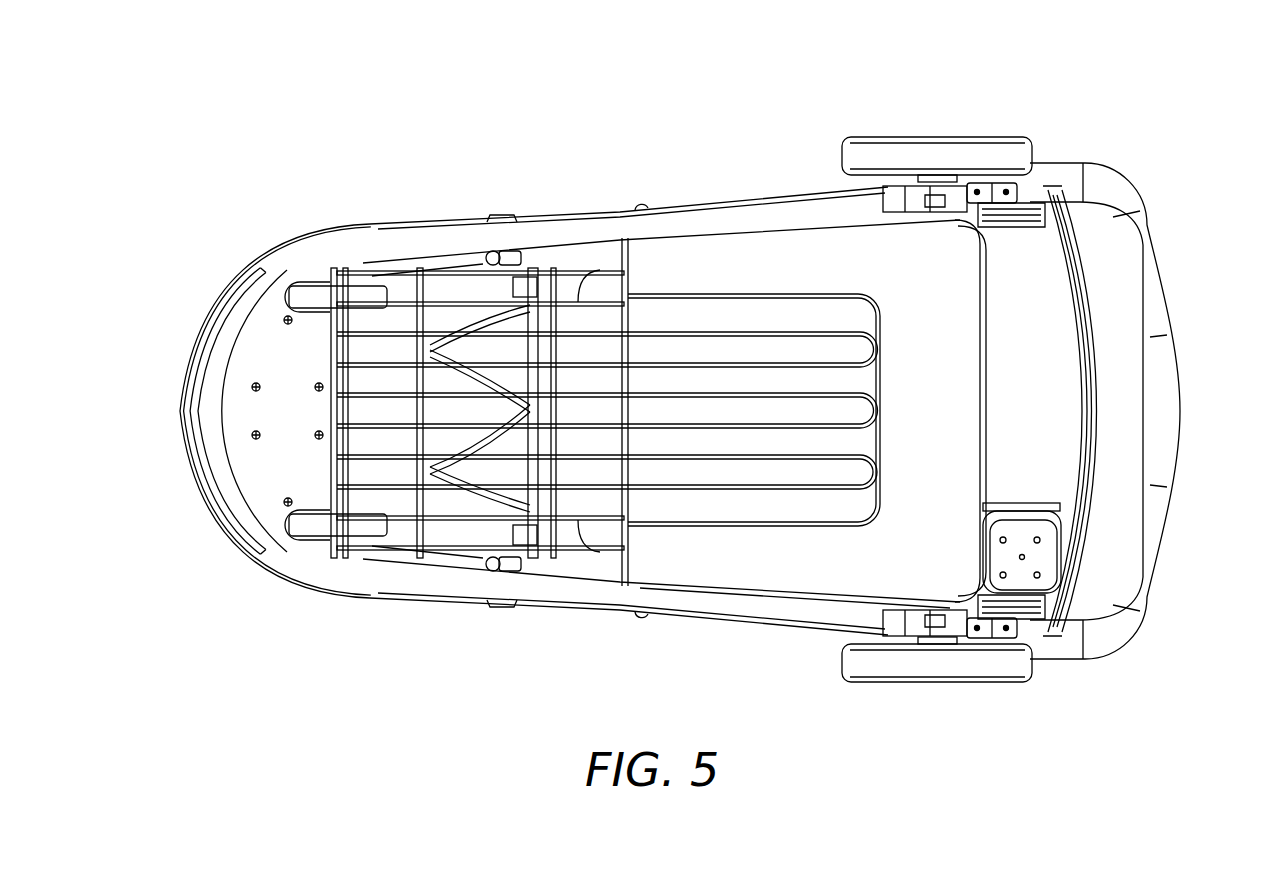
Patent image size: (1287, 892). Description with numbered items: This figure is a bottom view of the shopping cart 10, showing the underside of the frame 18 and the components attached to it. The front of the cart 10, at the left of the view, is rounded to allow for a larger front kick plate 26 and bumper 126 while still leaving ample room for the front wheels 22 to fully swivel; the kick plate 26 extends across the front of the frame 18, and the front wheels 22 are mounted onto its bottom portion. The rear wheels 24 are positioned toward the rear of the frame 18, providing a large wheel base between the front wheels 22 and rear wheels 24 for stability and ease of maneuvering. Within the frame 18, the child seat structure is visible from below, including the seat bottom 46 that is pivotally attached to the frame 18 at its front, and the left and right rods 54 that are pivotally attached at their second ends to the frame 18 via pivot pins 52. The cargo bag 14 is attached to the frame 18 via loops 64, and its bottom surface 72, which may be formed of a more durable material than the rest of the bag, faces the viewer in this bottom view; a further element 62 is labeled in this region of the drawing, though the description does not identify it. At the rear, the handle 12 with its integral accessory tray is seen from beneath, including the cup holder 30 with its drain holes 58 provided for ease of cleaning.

The shopping cart 10 is at (714, 120).
The handle 12 is at (1175, 409).
The cargo bag 14 is at (1033, 321).
The frame 18 is at (721, 207).
The front wheels 22 is at (361, 297).
The rear wheels 24 is at (925, 160).
The kick plate 26 is at (252, 478).
The cup holder 30 is at (1040, 557).
The seat bottom 46 is at (394, 262).
The pivot pins 52 is at (500, 217).
The rods 54 is at (523, 267).
The drain holes 58 is at (1040, 540).
The wire panel 62 is at (757, 293).
The loops 64 is at (647, 204).
The bottom surface 72 is at (797, 568).
The bumper 126 is at (179, 450).